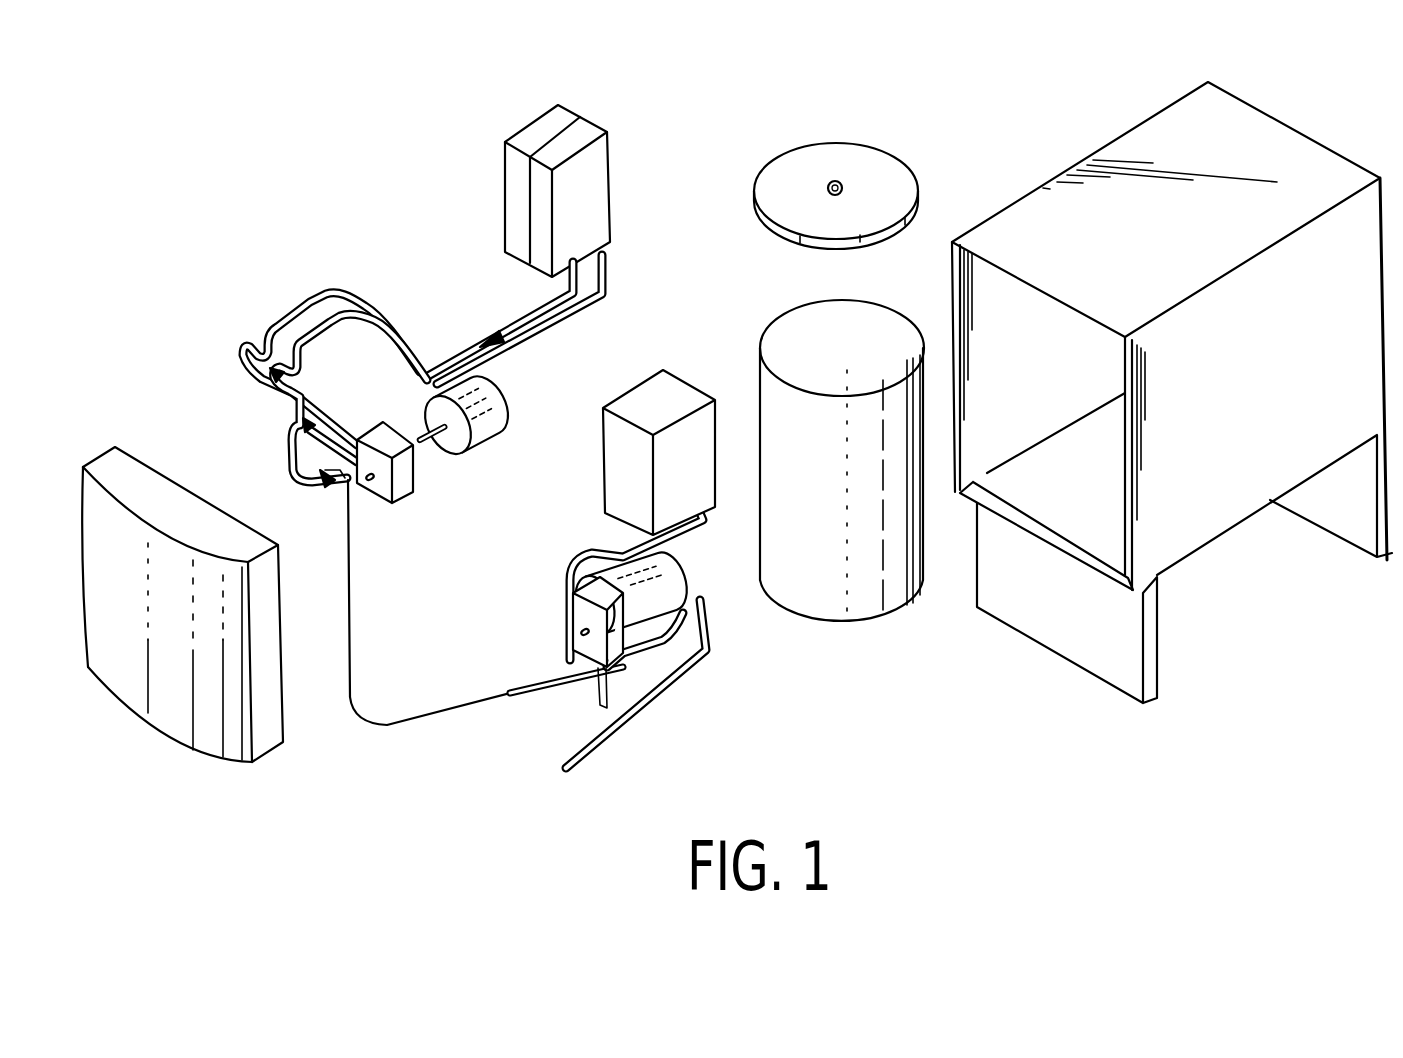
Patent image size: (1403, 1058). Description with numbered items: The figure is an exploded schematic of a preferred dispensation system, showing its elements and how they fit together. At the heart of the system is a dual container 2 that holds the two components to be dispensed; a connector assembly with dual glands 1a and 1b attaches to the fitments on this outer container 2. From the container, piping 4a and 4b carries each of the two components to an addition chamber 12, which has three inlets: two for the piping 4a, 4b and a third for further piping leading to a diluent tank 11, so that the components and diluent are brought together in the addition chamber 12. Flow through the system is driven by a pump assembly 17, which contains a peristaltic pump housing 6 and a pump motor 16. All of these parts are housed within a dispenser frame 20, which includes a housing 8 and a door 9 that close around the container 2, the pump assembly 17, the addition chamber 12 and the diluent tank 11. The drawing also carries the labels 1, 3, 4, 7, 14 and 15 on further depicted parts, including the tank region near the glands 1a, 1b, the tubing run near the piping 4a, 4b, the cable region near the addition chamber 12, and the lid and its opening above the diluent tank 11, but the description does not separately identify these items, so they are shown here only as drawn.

The water tank 1 is at (597, 193).
The gland 1a is at (538, 273).
The gland 1b is at (507, 255).
The dual container 2 is at (515, 132).
The pump unit 3 is at (691, 171).
The heating tube 4 is at (268, 320).
The piping 4a is at (300, 447).
The piping 4b is at (312, 418).
The peristaltic pump housing 6 is at (373, 437).
The cable 7 is at (428, 652).
The housing 8 is at (1137, 122).
The door 9 is at (140, 457).
The diluent tank 11 is at (870, 598).
The addition chamber 12 is at (332, 500).
The lid 14 is at (857, 140).
The lid opening 15 is at (830, 182).
The pump motor 16 is at (433, 397).
The pump assembly 17 is at (397, 203).
The dispenser frame 20 is at (1265, 623).